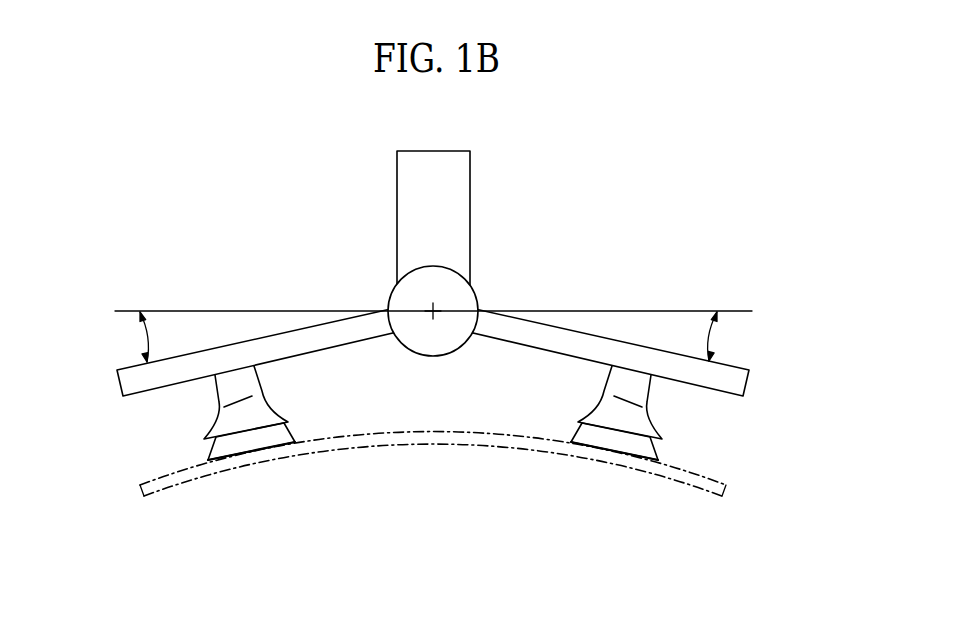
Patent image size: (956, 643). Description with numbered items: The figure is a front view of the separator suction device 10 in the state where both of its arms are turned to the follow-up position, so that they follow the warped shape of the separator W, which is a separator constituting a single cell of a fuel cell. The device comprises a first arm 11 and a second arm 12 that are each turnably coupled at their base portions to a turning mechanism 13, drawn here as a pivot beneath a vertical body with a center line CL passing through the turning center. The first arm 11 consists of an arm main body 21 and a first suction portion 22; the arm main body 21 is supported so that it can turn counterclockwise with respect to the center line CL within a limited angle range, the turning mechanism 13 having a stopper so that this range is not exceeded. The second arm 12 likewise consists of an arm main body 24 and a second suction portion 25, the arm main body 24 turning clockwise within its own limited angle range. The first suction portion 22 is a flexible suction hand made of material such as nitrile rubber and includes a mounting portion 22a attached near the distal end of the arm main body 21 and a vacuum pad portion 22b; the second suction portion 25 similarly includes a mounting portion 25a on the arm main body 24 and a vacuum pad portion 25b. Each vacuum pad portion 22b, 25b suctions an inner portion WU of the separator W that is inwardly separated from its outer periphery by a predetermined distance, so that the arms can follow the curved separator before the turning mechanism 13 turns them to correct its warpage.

The separator suction device 10 is at (433, 291).
The first arm 11 is at (244, 383).
The second arm 12 is at (622, 381).
The turning mechanism 13 is at (477, 293).
The arm main body 21 is at (116, 386).
The first suction portion 22 is at (235, 413).
The mounting portion 22a is at (215, 388).
The vacuum pad portion 22b is at (212, 448).
The arm main body 24 is at (750, 385).
The second suction portion 25 is at (633, 412).
The mounting portion 25a is at (652, 386).
The vacuum pad portion 25b is at (654, 449).
The center line CL is at (737, 311).
The separator W is at (688, 486).
The inner portion WU is at (248, 458).